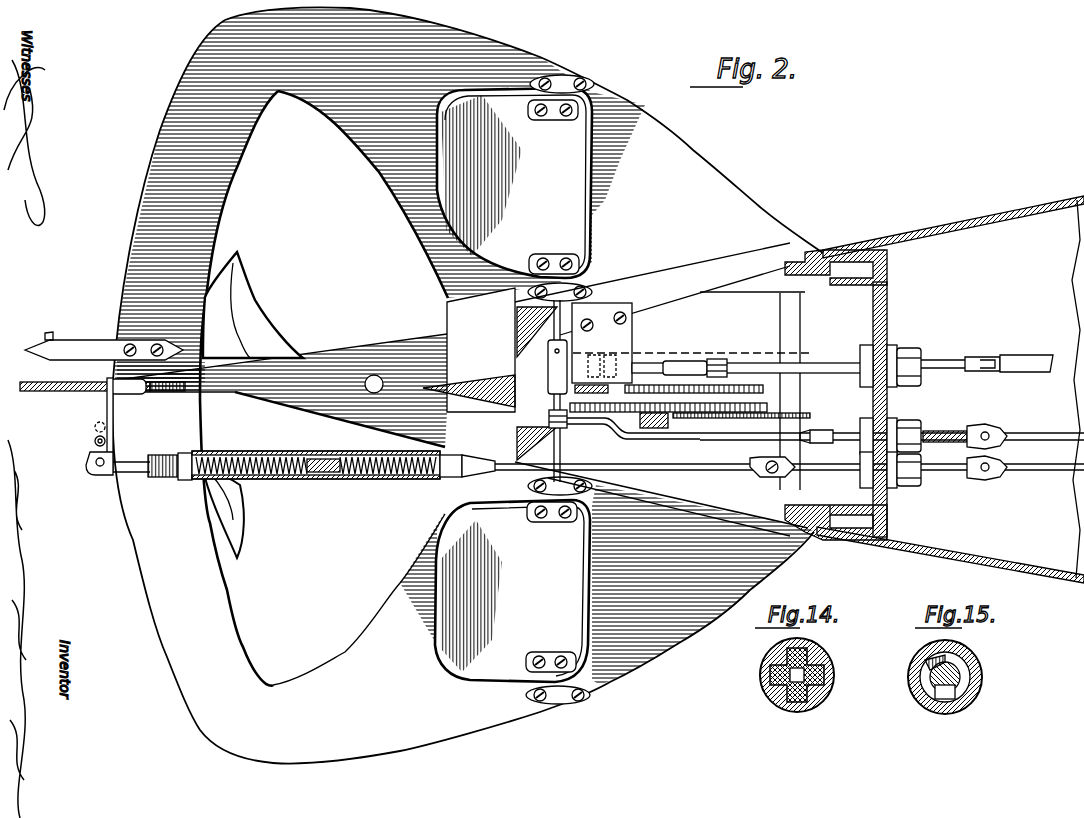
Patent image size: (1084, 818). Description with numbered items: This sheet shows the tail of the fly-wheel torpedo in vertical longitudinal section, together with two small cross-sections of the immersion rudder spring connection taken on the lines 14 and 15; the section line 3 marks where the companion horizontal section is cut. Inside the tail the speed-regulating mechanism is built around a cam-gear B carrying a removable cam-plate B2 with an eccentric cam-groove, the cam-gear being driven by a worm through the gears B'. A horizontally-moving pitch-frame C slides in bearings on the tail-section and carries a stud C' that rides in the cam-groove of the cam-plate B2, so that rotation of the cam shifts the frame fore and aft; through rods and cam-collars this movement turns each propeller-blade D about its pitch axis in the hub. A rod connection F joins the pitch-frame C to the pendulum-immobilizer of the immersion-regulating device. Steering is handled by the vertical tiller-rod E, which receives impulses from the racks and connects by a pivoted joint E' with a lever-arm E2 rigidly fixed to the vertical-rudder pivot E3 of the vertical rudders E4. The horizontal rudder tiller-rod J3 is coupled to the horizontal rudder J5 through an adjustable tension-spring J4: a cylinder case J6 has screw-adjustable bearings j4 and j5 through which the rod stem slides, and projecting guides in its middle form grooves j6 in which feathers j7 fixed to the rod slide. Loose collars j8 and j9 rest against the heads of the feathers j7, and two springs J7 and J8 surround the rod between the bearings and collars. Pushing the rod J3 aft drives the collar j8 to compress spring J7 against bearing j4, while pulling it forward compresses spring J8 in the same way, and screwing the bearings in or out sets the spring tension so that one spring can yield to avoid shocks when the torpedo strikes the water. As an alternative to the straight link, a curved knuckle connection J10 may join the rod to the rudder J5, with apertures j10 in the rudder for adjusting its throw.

In FIG. 2, the section line 3 3 is at (1083, 360).
In FIG. 2, the section line 14 14 is at (325, 447).
In FIG. 2, the section line 15 15 is at (370, 550).
In FIG. 2, the propeller-blade D is at (253, 280).
In FIG. 2, the vertical rudders E4 is at (514, 389).
In FIG. 2, the lever-arm E2 is at (508, 372).
In FIG. 2, the vertical-rudder pivot E3 is at (624, 391).
In FIG. 2, the pivoted joint E' is at (690, 452).
In FIG. 2, the vertical tiller-rod E is at (892, 424).
In FIG. 2, the pitch-frame C is at (691, 348).
In FIG. 2, the stud C' is at (634, 461).
In FIG. 2, the cam-gear B is at (711, 412).
In FIG. 2, the cam-plate B2 is at (760, 395).
In FIG. 2, the gears B' is at (752, 404).
In FIG. 2, the rod connection F is at (938, 362).
In FIG. 2, the horizontal rudder tiller-rod J3 is at (705, 478).
In FIG. 14, the horizontal rudder tiller-rod J3 is at (818, 660).
In FIG. 15, the horizontal rudder tiller-rod J3 is at (932, 687).
In FIG. 2, the adjustable tension-spring J4 is at (262, 480).
In FIG. 2, the adjustable bearing j4 is at (165, 480).
In FIG. 2, the rudder J5 is at (30, 392).
In FIG. 2, the adjustable bearing j5 is at (478, 458).
In FIG. 2, the cylinder case J6 is at (350, 480).
In FIG. 14, the cylinder case J6 is at (770, 690).
In FIG. 15, the cylinder case J6 is at (972, 690).
In FIG. 14, the grooves j6 is at (790, 705).
In FIG. 2, the spring J7 is at (232, 515).
In FIG. 2, the feathers j7 is at (310, 481).
In FIG. 14, the feathers j7 is at (803, 675).
In FIG. 15, the feathers j7 is at (962, 678).
In FIG. 2, the spring J8 is at (410, 480).
In FIG. 2, the loose collar j8 is at (300, 481).
In FIG. 2, the loose collar j9 is at (370, 392).
In FIG. 15, the loose collar j9 is at (958, 660).
In FIG. 2, the curved knuckle connection J10 is at (110, 478).
In FIG. 2, the apertures j10 is at (88, 433).